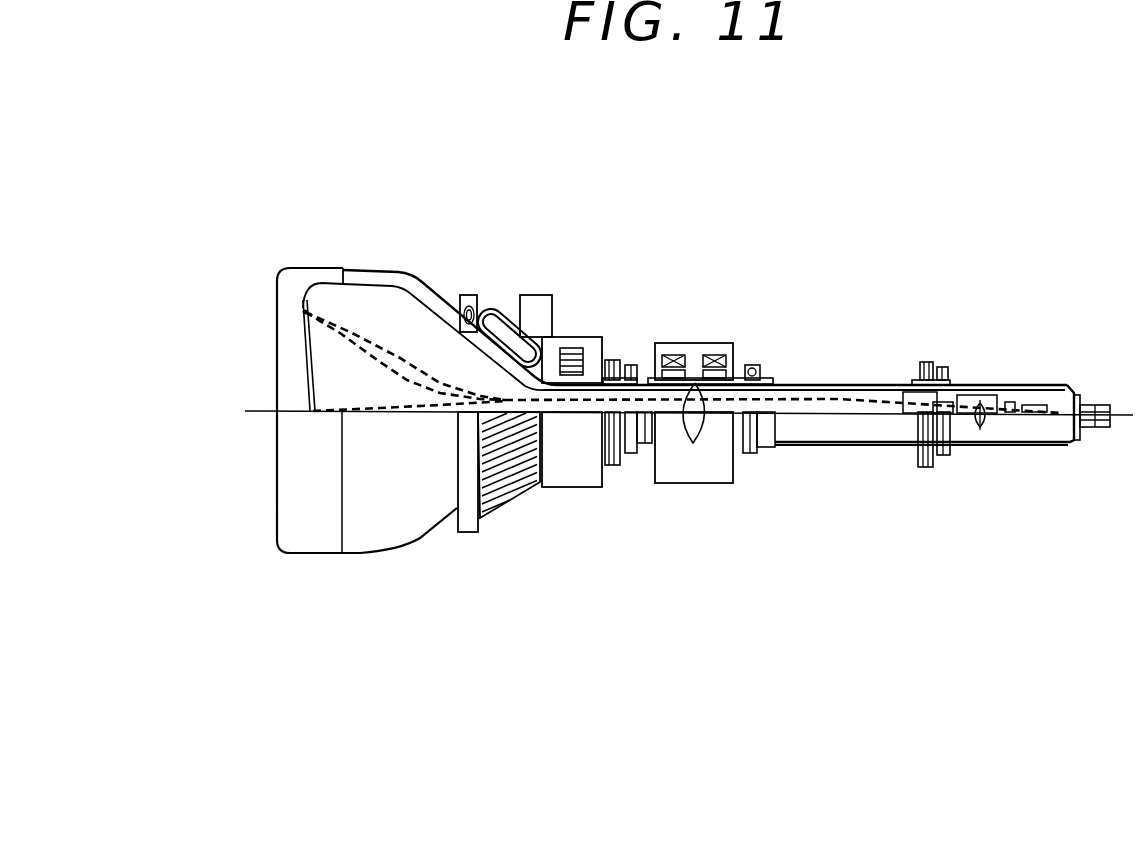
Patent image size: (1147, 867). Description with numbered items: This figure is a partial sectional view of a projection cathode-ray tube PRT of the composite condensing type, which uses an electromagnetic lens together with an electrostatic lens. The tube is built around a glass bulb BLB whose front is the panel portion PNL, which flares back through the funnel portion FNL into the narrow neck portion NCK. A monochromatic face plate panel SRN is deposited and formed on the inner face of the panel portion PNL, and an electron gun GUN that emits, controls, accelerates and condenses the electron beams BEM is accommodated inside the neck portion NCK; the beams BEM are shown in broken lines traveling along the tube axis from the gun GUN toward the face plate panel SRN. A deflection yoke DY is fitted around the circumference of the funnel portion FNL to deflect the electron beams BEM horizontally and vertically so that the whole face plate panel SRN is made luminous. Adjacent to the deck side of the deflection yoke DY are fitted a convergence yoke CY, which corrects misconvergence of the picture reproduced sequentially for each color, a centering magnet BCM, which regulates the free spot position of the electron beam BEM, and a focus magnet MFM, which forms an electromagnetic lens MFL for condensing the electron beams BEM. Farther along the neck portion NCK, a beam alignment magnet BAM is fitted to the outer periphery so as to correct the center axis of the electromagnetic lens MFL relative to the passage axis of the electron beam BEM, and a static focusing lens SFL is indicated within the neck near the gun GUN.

The projection cathode-ray tube PRT is at (733, 188).
The panel portion PNL is at (287, 370).
The face plate panel SRN is at (305, 355).
The glass bulb BLB is at (370, 262).
The funnel portion FNL is at (428, 295).
The deflection yoke DY is at (492, 313).
The convergence yoke CY is at (590, 332).
The centering magnet BCM is at (607, 362).
The focus magnet MFM is at (697, 342).
The electromagnetic lens MFL is at (683, 445).
The electron beams BEM is at (857, 402).
The neck portion NCK is at (1057, 387).
The beam alignment magnet BAM is at (915, 458).
The electron gun GUN is at (1008, 387).
The static focusing lens SFL is at (983, 402).